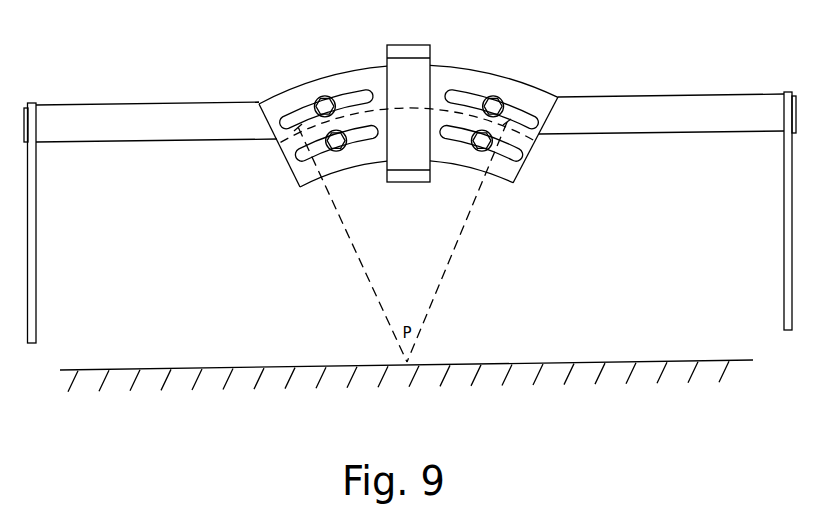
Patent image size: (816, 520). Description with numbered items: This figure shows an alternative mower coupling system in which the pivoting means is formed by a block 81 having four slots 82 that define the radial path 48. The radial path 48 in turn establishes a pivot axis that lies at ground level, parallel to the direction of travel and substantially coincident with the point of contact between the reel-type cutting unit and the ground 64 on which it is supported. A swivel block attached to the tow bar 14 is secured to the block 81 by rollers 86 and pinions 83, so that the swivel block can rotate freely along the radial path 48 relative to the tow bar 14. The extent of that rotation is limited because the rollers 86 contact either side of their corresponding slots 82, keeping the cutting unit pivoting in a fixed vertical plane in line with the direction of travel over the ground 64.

The tow bar 14 is at (733, 105).
The radial path 48 is at (403, 110).
The ground 64 is at (617, 363).
The block 81 is at (445, 75).
The slots 82 is at (283, 121).
The pinions 83 is at (488, 146).
The rollers 86 is at (500, 98).